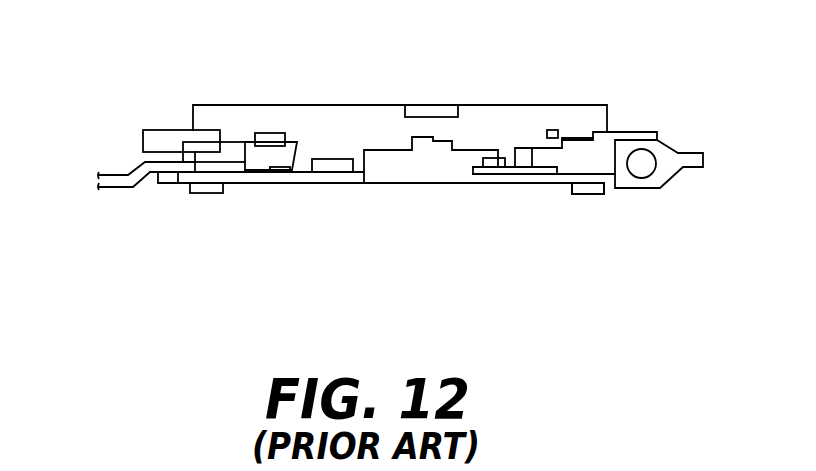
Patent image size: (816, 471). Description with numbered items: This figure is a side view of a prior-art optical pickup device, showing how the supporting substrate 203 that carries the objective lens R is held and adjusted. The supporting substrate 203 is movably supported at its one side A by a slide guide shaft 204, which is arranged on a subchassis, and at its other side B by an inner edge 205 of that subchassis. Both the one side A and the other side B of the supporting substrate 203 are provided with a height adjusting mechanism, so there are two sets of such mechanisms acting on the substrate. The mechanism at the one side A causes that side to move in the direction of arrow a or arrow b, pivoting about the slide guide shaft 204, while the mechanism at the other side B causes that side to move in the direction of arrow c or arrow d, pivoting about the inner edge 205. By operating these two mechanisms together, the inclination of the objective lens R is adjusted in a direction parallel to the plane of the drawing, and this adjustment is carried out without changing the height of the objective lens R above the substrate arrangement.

The supporting substrate 203 is at (420, 168).
The slide guide shaft 204 is at (662, 156).
The inner edge 205 is at (140, 173).
The objective lens R is at (430, 110).
The one side A is at (622, 200).
The other side B is at (212, 197).
The arrow a is at (700, 90).
The arrow b is at (723, 213).
The arrow c is at (112, 112).
The arrow d is at (110, 238).